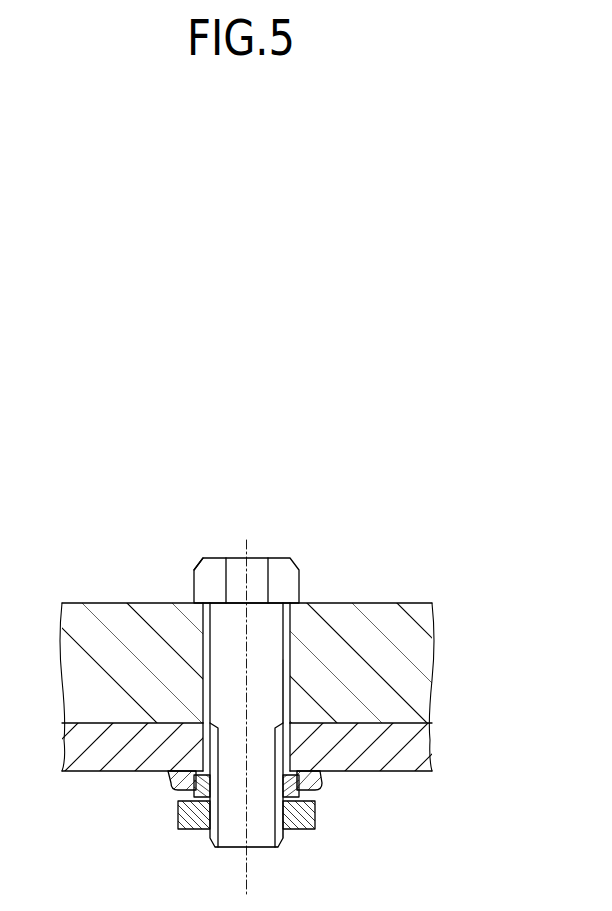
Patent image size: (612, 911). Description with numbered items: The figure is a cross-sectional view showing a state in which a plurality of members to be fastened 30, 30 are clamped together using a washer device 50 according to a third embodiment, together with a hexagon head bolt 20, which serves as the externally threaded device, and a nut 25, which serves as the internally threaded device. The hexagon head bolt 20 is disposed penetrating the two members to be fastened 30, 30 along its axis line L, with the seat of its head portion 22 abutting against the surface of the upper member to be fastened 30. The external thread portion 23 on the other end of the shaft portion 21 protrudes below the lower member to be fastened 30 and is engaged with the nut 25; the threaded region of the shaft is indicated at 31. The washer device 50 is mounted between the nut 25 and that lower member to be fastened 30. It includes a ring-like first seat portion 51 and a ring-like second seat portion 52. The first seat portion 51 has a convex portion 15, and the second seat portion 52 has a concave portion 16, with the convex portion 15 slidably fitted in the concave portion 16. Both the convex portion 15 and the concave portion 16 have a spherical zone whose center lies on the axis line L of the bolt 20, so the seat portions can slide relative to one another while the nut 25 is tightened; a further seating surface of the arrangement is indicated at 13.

The axis line L is at (248, 541).
The hexagon head bolt 20 is at (278, 558).
The head portion 22 is at (213, 558).
The shaft portion 21 is at (258, 627).
The thread portion 31 is at (270, 690).
The member to be fastened 30 is at (418, 660).
The seal member (left) 13 is at (187, 794).
The concave portion 16 is at (320, 785).
The washer device 50 is at (417, 828).
The first seat portion 51 is at (312, 795).
The second seat portion 52 is at (320, 805).
The nut 25 is at (174, 815).
The external thread portion 23 is at (233, 832).
The convex portion 15 is at (286, 832).